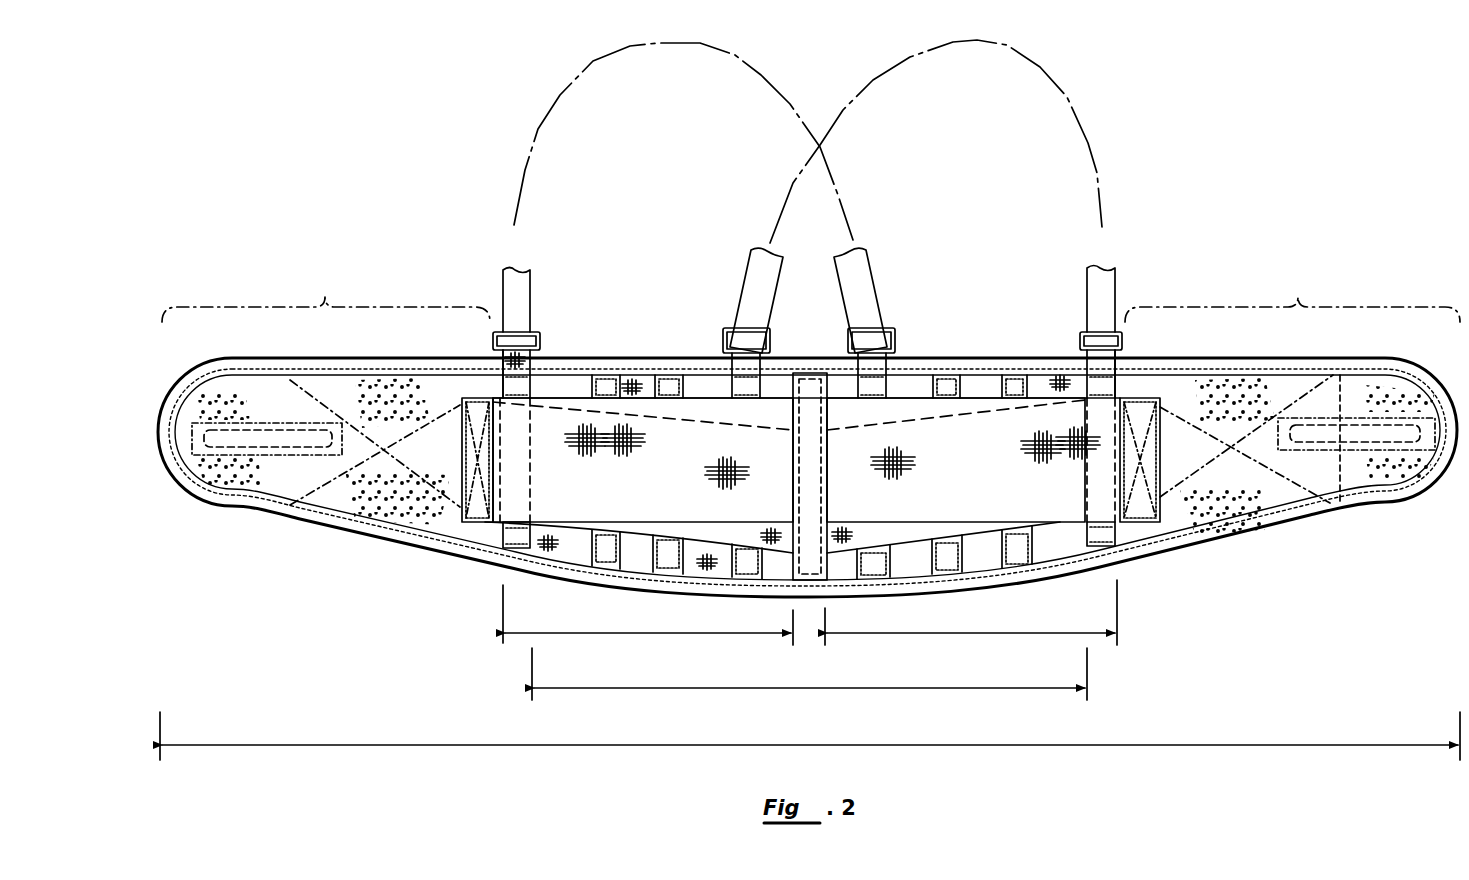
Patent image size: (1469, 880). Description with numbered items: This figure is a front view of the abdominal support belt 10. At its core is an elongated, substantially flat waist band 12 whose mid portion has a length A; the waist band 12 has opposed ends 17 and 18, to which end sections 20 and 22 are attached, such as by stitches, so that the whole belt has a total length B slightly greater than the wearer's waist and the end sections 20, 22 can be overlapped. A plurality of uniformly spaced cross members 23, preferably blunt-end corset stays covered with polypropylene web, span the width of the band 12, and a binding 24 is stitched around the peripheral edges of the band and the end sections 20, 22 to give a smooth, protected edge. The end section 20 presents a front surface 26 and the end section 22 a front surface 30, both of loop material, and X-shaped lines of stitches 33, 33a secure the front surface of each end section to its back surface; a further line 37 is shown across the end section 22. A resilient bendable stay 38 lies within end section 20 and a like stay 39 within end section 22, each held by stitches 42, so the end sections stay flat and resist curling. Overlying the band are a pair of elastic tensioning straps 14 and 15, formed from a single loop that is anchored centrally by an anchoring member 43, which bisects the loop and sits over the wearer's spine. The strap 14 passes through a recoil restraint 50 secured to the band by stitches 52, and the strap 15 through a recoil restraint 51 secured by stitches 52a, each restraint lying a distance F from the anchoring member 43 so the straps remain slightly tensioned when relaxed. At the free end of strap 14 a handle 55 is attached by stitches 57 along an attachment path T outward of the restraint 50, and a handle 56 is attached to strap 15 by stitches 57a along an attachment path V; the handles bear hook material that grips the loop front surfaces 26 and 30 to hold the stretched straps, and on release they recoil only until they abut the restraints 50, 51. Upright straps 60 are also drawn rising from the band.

The abdominal support belt 10 is at (1424, 513).
The waist band 12 is at (572, 392).
The tensioning strap 14 is at (545, 530).
The tensioning strap 15 is at (1054, 522).
The end of waist band 17 is at (531, 553).
The end of waist band 18 is at (1073, 552).
The end section 20 is at (326, 297).
The end section 22 is at (1292, 297).
The cross members 23 is at (672, 377).
The binding 24 is at (327, 520).
The front surface of end section 20 26 is at (378, 380).
The front surface of end section 22 30 is at (1277, 387).
The X-shaped line of stitches 33 is at (375, 443).
The right crossed stays 33a is at (1246, 439).
The vertical stay 37 is at (1342, 397).
The resilient bendable stay 38 is at (270, 424).
The resilient bendable stay 39 is at (1372, 432).
The stitches 42 is at (202, 425).
The anchoring member 43 is at (823, 581).
The recoil restraint 50 is at (531, 378).
The recoil restraint 51 is at (1112, 532).
The stitches 52 is at (510, 531).
The stitches 52a is at (1121, 392).
The handle 55 is at (466, 442).
The handle 56 is at (1160, 443).
The stitches 57 is at (505, 486).
The stitches 57a is at (1016, 426).
The shoulder straps 60 is at (522, 292).
The attachment path T is at (505, 452).
The attachment path V is at (1105, 476).
The distance F is at (673, 633).
The length of waist band A is at (831, 687).
The total length of belt B is at (826, 745).